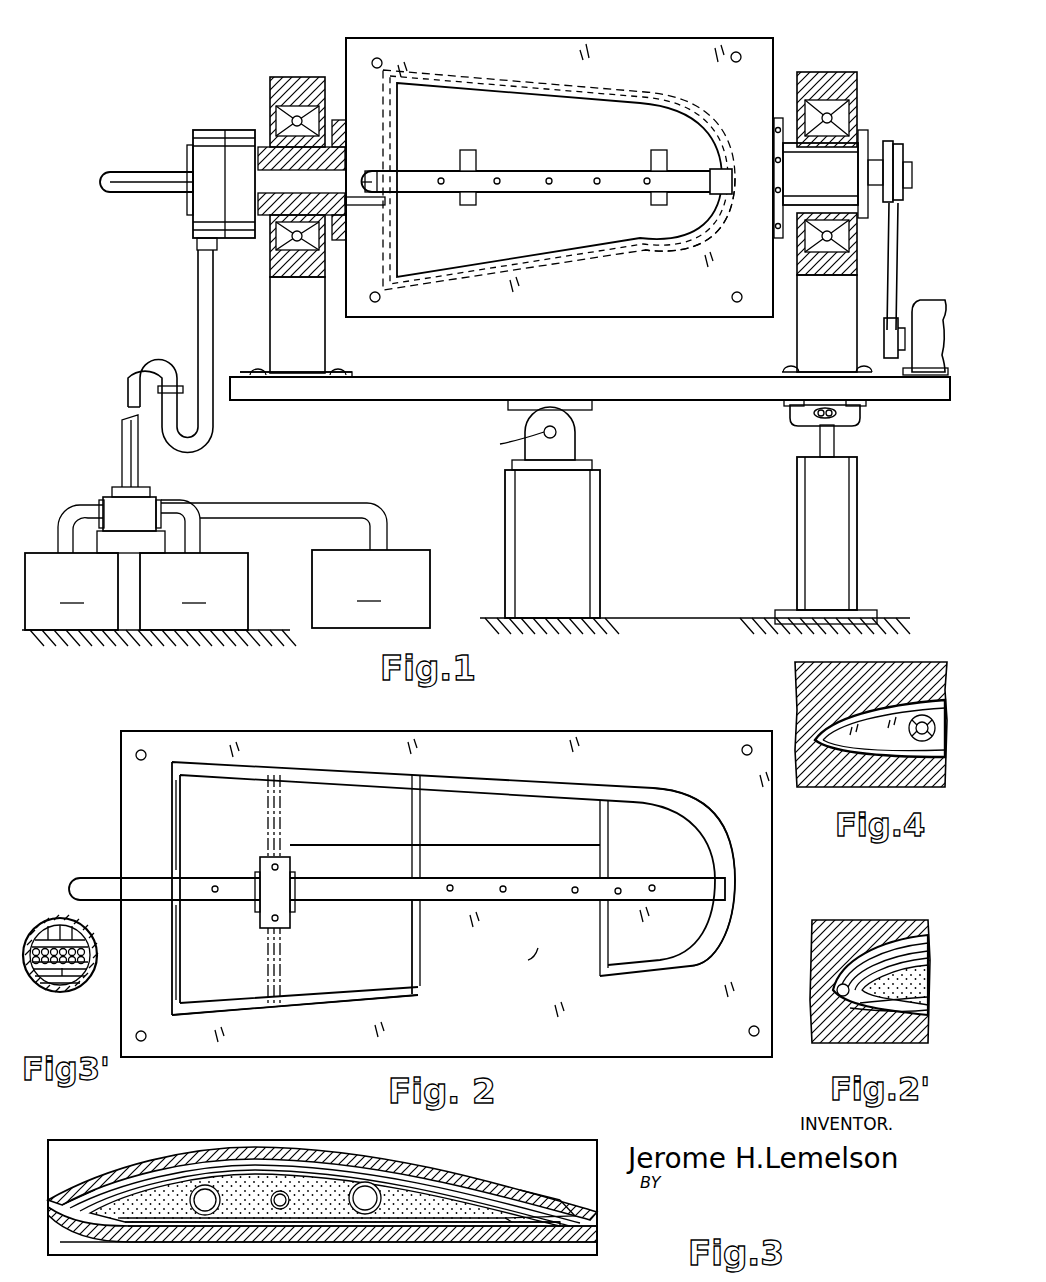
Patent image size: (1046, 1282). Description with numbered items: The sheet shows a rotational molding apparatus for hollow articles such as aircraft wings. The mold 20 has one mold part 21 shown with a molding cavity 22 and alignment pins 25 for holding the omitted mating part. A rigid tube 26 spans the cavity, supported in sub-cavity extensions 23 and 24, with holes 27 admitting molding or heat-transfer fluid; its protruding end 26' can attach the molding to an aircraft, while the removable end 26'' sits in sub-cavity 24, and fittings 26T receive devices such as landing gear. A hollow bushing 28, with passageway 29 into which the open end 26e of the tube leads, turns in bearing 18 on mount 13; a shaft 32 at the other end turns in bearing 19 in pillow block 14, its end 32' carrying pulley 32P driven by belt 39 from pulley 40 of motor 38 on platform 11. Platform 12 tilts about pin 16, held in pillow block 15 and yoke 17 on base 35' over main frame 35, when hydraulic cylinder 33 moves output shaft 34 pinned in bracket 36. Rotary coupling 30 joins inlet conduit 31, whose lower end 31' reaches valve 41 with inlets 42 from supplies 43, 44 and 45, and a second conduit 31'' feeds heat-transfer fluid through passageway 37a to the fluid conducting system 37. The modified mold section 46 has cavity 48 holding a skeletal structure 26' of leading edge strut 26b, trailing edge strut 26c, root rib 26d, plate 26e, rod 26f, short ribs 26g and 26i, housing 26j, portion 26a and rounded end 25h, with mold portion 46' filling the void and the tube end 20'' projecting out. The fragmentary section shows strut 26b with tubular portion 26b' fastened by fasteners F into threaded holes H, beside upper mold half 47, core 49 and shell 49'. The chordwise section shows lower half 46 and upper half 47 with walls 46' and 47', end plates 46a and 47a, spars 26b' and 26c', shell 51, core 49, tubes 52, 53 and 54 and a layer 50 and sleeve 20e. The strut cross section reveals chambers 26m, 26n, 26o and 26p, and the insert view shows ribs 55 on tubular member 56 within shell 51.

In FIG. 1, the platform 11 is at (345, 403).
In FIG. 1, the platform 12 is at (428, 401).
In FIG. 1, the mount 13 is at (318, 351).
In FIG. 1, the second elongated pillow block 14 is at (815, 72).
In FIG. 1, the pillow block 15 is at (575, 430).
In FIG. 1, the shaft or pin 16 is at (526, 440).
In FIG. 1, the yoke 17 is at (572, 442).
In FIG. 1, the bearing 18 is at (276, 118).
In FIG. 1, the ball or roller bearing 19 is at (856, 112).
In FIG. 1, the mold 20 is at (559, 146).
In FIG. 1, the mold sleeve 20e is at (385, 182).
In FIG. 1, the mold part 21 is at (355, 50).
In FIG. 1, the molding cavity 22 is at (505, 100).
In FIG. 1, the sub-cavity extension 23 is at (388, 205).
In FIG. 1, the sub-cavity extension 24 is at (728, 205).
In FIG. 1, the alignment pins 25 is at (741, 52).
In FIG. 2, the alignment pins 25 is at (138, 752).
In FIG. 2, the rounded frame end 25h is at (683, 945).
In FIG. 1, the rigid tube or pipe 26 is at (542, 160).
In FIG. 2, the skeletal structure 26' is at (453, 855).
In FIG. 1, the centrally disposed tubular member 26'' is at (739, 156).
In FIG. 2, the shaft end 20'' is at (385, 862).
In FIG. 1, the fittings 26T is at (656, 152).
In FIG. 2, the portion of tubular member 26a is at (398, 877).
In FIG. 2, the leading edge strut 26b is at (445, 818).
In FIG. 3, the leading edge strut 26b is at (56, 1156).
In FIG. 2', the leading edge strut 26b is at (883, 926).
In FIG. 2', the tubular portion 26b' is at (808, 1034).
In FIG. 2, the trailing edge strut 26c is at (295, 985).
In FIG. 3, the trailing edge spar 26c' is at (569, 1162).
In FIG. 2, the wing root strut or rib 26d is at (205, 848).
In FIG. 2, the plate 26e is at (282, 862).
In FIG. 2, the rod or rib 26f is at (282, 962).
In FIG. 2, the short rib or rod 26g is at (412, 960).
In FIG. 2, the rib or lateral rod 26i is at (606, 925).
In FIG. 2, the housing 26j is at (592, 858).
In FIG. 3', the chamber 26m is at (40, 988).
In FIG. 3', the chamber 26n is at (80, 972).
In FIG. 3', the chamber 26o is at (38, 935).
In FIG. 3', the chamber 26p is at (68, 938).
In FIG. 1, the holes 27 is at (548, 179).
In FIG. 2, the holes 27 is at (653, 874).
In FIG. 3', the holes 27 is at (66, 992).
In FIG. 1, the hollow bushing 28 is at (268, 150).
In FIG. 1, the interior passageway 29 is at (365, 180).
In FIG. 1, the rotary coupling 30 is at (203, 130).
In FIG. 1, the inlet conduit 31 is at (170, 351).
In FIG. 1, the lower end of conduit 31' is at (106, 451).
In FIG. 1, the second conduit 31'' is at (126, 153).
In FIG. 1, the shaft or pin 32 is at (828, 178).
In FIG. 1, the pulley or gear 32P is at (893, 143).
In FIG. 1, the end portion of shaft 32' is at (926, 172).
In FIG. 1, the hydraulic cylinder 33 is at (850, 475).
In FIG. 1, the output shaft 34 is at (820, 444).
In FIG. 1, the ground or main frame 35 is at (466, 646).
In FIG. 1, the base or frame 35' is at (584, 539).
In FIG. 1, the slotted receptacle or bracket 36 is at (858, 418).
In FIG. 1, the fluid conducting system 37 is at (490, 290).
In FIG. 1, the passageway 37a is at (390, 240).
In FIG. 1, the motor 38 is at (925, 302).
In FIG. 1, the belt 39 is at (899, 260).
In FIG. 1, the pulley 40 is at (884, 338).
In FIG. 1, the valve 41 is at (112, 497).
In FIG. 1, the inlets 42 is at (76, 510).
In FIG. 1, the supply means 43 is at (71, 591).
In FIG. 1, the supply means 44 is at (194, 591).
In FIG. 1, the supply means 45 is at (371, 589).
In FIG. 2, the mold section 46 is at (460, 878).
In FIG. 3, the mold section 46 is at (341, 1197).
In FIG. 4, the mold section 46 is at (861, 743).
In FIG. 2', the mold section 46 is at (879, 992).
In FIG. 2, the mold portion 46' is at (514, 960).
In FIG. 3, the mold portion 46' is at (344, 1225).
In FIG. 3, the end plates 46a is at (594, 1246).
In FIG. 3, the upper mold half 47 is at (322, 1154).
In FIG. 4, the upper mold half 47 is at (859, 699).
In FIG. 2', the upper mold half 47 is at (870, 952).
In FIG. 3, the main mold wall portion 47' is at (325, 1158).
In FIG. 3, the end plates 47a is at (532, 1147).
In FIG. 2, the molding cavity 48 is at (478, 782).
In FIG. 3, the molding cavity 48 is at (466, 1180).
In FIG. 2', the molding cavity 48 is at (890, 947).
In FIG. 3, the core molding material 49 is at (325, 1164).
In FIG. 2', the core molding material 49 is at (898, 944).
In FIG. 2', the outer shell 49' is at (897, 921).
In FIG. 3, the inner layer 50 is at (330, 1166).
In FIG. 3, the outer shell or molding 51 is at (238, 1168).
In FIG. 4, the outer shell or molding 51 is at (893, 708).
In FIG. 3, the tubular member 52 is at (203, 1186).
In FIG. 3, the tubular member 53 is at (362, 1182).
In FIG. 3, the inner tubular member 54 is at (278, 1192).
In FIG. 4, the wing ribs 55 is at (868, 718).
In FIG. 4, the tubular member 56 is at (925, 716).
In FIG. 2', the fasteners F is at (926, 985).
In FIG. 2', the threaded holes H is at (866, 1036).